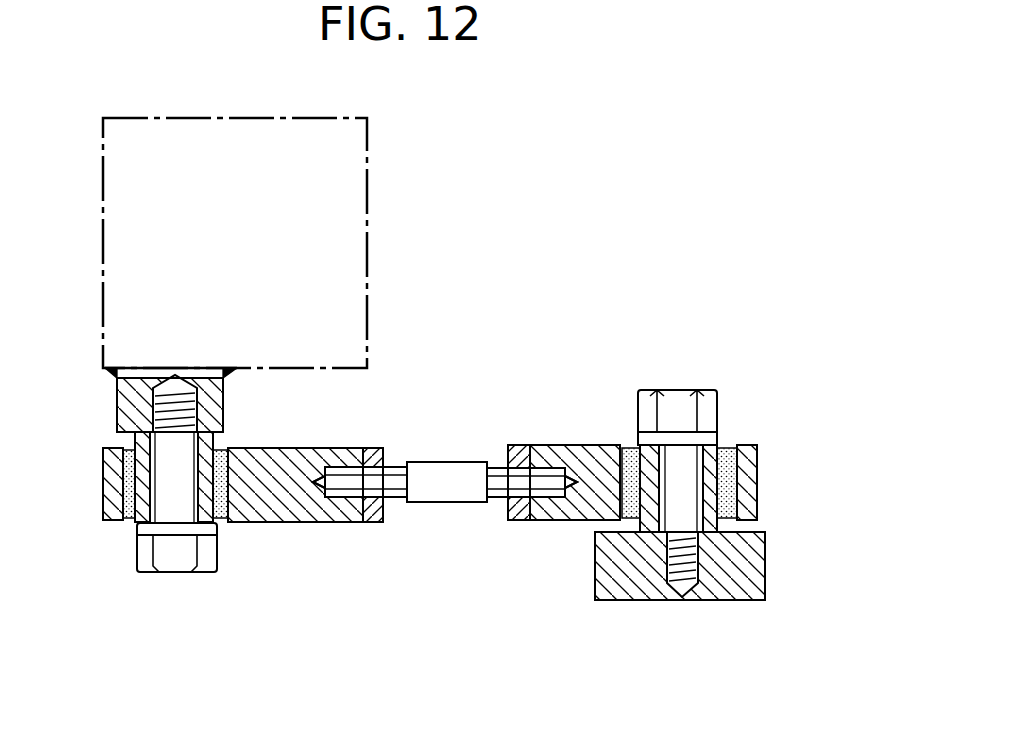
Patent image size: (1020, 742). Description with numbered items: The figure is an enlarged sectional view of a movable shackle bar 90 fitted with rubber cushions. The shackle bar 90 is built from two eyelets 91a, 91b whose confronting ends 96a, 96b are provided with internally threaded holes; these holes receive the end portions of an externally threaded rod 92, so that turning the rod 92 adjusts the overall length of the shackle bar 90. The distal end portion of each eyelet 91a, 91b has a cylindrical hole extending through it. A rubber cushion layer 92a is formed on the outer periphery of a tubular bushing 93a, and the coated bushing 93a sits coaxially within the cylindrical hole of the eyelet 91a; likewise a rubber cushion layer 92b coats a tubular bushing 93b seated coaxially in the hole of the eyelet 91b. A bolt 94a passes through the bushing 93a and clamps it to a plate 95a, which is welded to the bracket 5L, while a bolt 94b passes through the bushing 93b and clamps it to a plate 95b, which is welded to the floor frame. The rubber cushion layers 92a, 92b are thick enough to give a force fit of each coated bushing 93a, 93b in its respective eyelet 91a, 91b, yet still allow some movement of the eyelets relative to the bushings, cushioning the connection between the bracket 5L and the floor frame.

The bracket 5L is at (367, 250).
The shackle bar 90 is at (480, 418).
The eyelet 91a is at (262, 522).
The eyelet 91b is at (565, 522).
The rod 92 is at (432, 502).
The rubber cushion layer 92a is at (128, 520).
The rubber cushion layer 92b is at (635, 525).
The tubular bushing 93a is at (141, 522).
The tubular bushing 93b is at (650, 532).
The bolt 94a is at (189, 572).
The bolt 94b is at (685, 390).
The plate 95a is at (117, 403).
The plate 95b is at (737, 600).
The confronting end 96a is at (372, 522).
The confronting end 96b is at (510, 522).